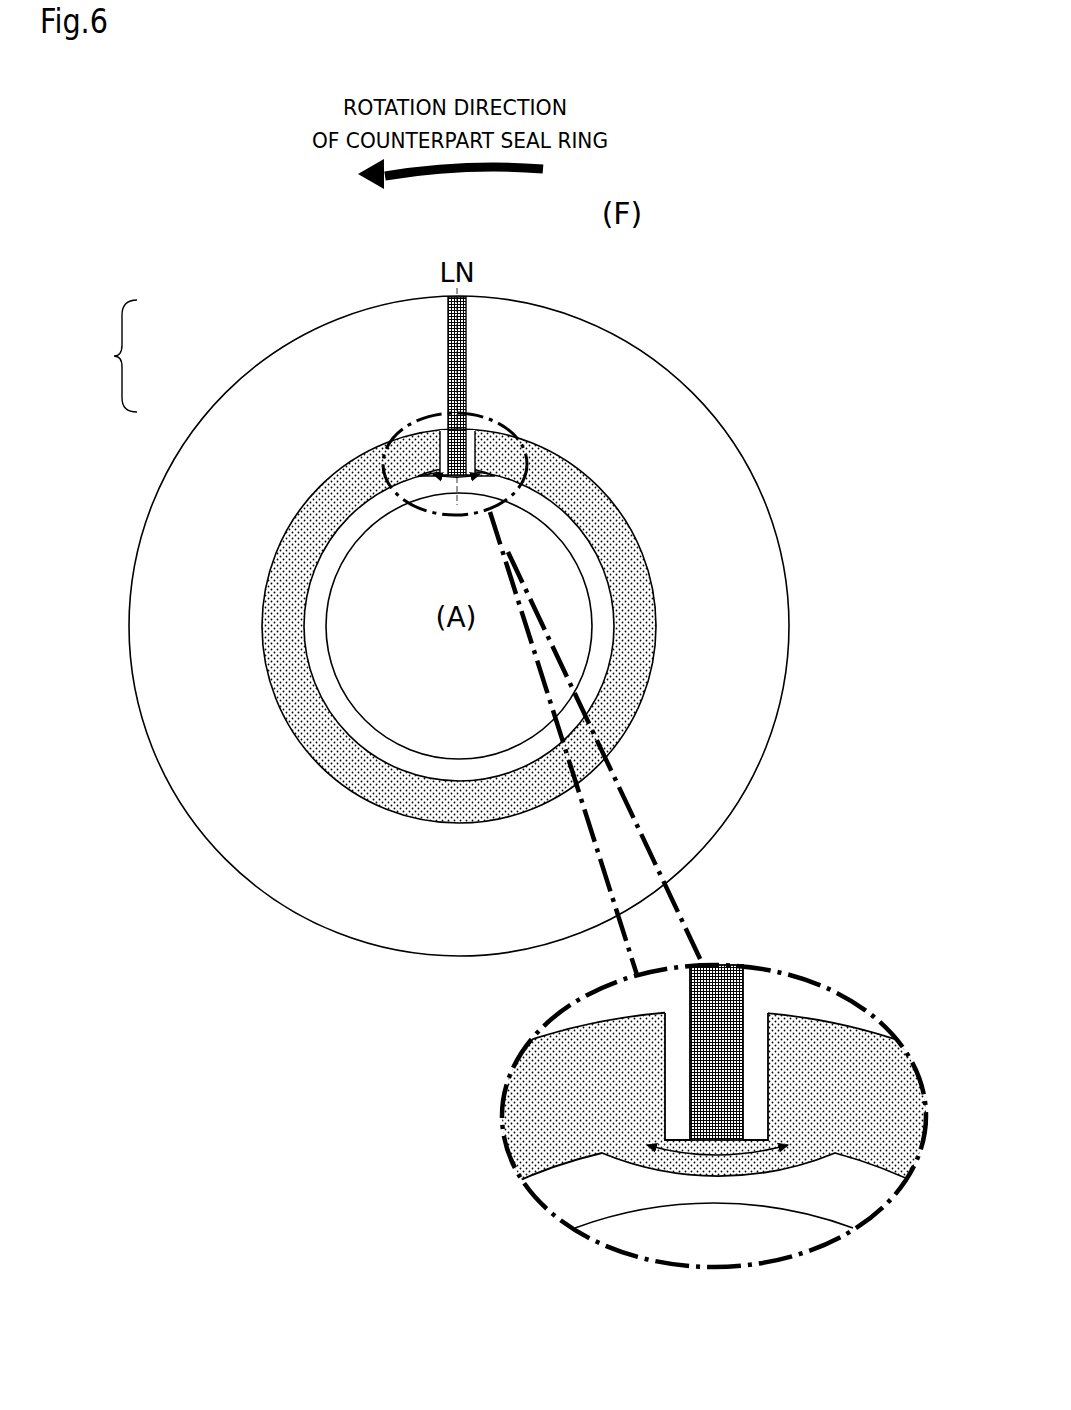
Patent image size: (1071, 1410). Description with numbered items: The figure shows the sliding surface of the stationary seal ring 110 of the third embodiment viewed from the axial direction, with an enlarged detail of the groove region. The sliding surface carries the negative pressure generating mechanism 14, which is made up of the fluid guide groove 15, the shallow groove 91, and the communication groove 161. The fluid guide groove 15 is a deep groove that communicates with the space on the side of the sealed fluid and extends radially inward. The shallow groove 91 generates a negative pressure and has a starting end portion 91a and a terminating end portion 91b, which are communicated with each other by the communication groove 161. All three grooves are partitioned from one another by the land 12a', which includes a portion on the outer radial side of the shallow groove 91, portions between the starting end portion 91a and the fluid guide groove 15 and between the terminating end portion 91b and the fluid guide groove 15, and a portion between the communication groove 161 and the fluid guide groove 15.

The negative pressure generating mechanism 14 is at (103, 356).
The fluid guide groove 15 is at (442, 347).
The shallow groove 91 is at (538, 1104).
The starting end portion 91a is at (421, 456).
The terminating end portion 91b is at (488, 452).
The communication groove 161 is at (392, 478).
The stationary seal ring 110 is at (657, 328).
The land 12a' is at (714, 880).